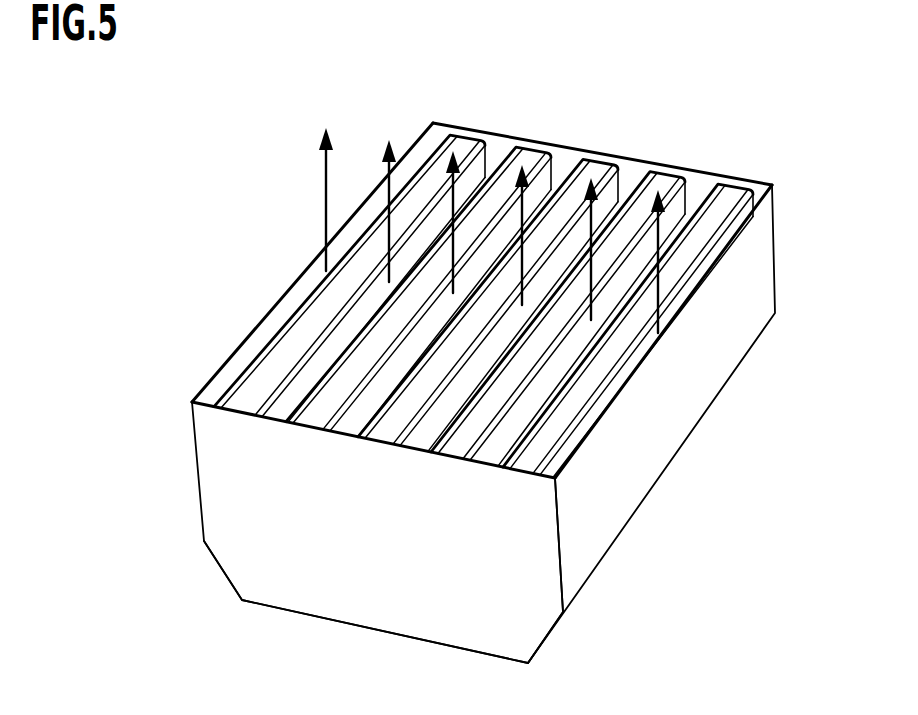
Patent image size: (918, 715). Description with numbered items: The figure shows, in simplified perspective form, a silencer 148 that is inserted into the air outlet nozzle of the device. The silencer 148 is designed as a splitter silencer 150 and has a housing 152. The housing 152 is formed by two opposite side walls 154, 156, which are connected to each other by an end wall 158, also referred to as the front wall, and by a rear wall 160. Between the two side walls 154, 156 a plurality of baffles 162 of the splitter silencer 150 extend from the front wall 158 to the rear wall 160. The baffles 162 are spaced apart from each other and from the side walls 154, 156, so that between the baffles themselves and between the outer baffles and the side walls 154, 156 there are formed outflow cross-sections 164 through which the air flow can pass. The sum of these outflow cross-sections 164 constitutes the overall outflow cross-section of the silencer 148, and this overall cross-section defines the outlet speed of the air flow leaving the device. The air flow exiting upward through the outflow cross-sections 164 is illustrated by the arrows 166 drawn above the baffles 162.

The silencer 148 is at (766, 160).
The splitter silencer 150 is at (792, 193).
The housing 152 is at (272, 470).
The side wall 154 is at (228, 364).
The side wall 156 is at (698, 386).
The end wall 158 is at (254, 565).
The rear wall 160 is at (633, 163).
The baffles 162 is at (412, 397).
The outflow cross-sections 164 is at (417, 156).
The arrows 166 is at (385, 205).